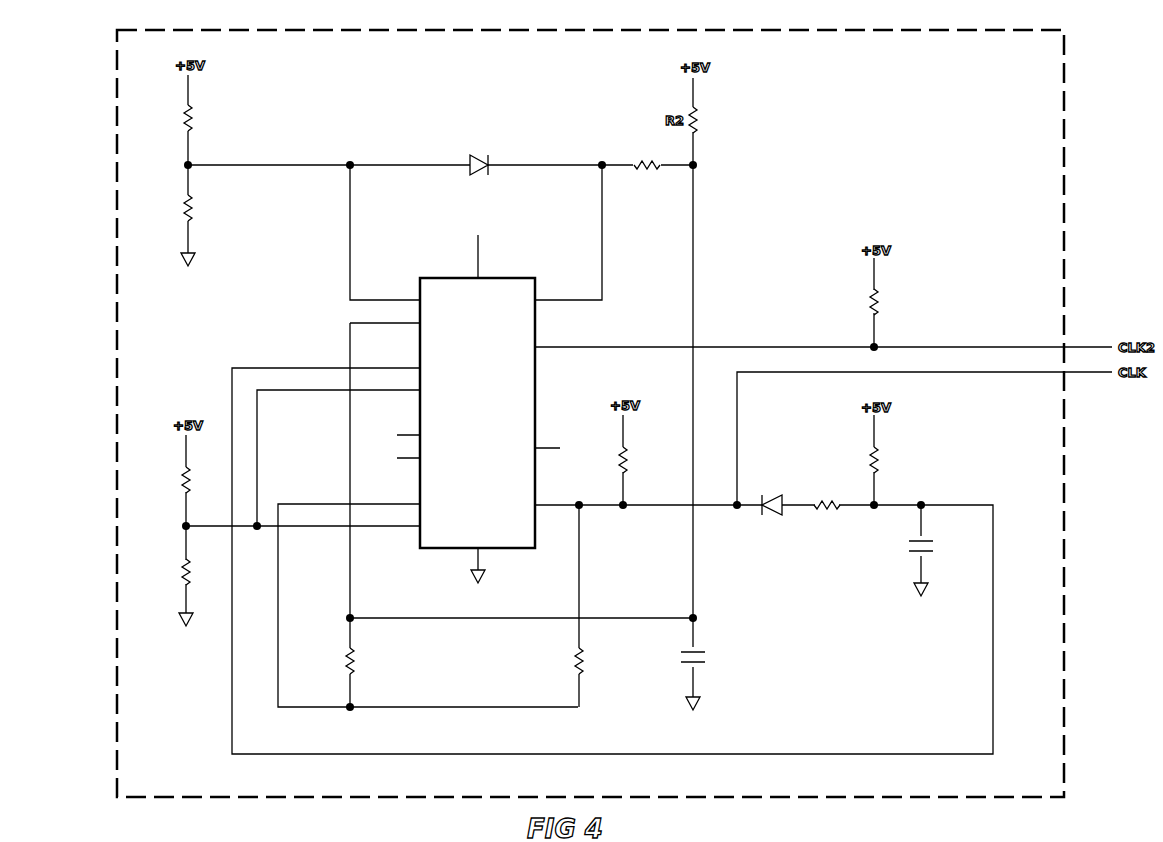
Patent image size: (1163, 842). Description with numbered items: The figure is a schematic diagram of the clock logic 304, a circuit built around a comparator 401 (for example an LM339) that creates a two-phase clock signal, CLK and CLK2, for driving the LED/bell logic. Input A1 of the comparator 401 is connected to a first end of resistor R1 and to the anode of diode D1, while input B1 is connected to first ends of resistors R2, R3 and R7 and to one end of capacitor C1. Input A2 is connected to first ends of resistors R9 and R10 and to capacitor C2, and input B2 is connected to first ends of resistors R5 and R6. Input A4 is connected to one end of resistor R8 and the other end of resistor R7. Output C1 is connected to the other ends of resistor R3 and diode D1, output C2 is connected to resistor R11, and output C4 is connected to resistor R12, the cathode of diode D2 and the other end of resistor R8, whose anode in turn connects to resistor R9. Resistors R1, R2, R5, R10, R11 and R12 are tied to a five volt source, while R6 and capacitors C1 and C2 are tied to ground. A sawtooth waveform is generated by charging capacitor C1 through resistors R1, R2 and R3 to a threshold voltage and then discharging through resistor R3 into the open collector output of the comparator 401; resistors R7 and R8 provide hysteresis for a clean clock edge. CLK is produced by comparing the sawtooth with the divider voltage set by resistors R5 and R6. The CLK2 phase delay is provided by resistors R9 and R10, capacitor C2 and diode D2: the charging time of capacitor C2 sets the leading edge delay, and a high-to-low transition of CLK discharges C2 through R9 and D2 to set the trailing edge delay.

The clock logic 304 is at (325, 797).
The comparator 401 is at (508, 276).
The resistor R1 is at (176, 120).
The resistor R2 is at (177, 215).
The resistor R3 is at (647, 153).
The resistor R5 is at (174, 480).
The resistor R6 is at (175, 576).
The resistor R7 is at (337, 662).
The resistor R8 is at (566, 606).
The resistor R9 is at (827, 493).
The resistor R10 is at (858, 460).
The resistor R11 is at (858, 302).
The resistor R12 is at (607, 460).
The capacitor C1 is at (705, 664).
The capacitor C2 is at (934, 550).
The diode D1 is at (481, 156).
The diode D2 is at (772, 496).